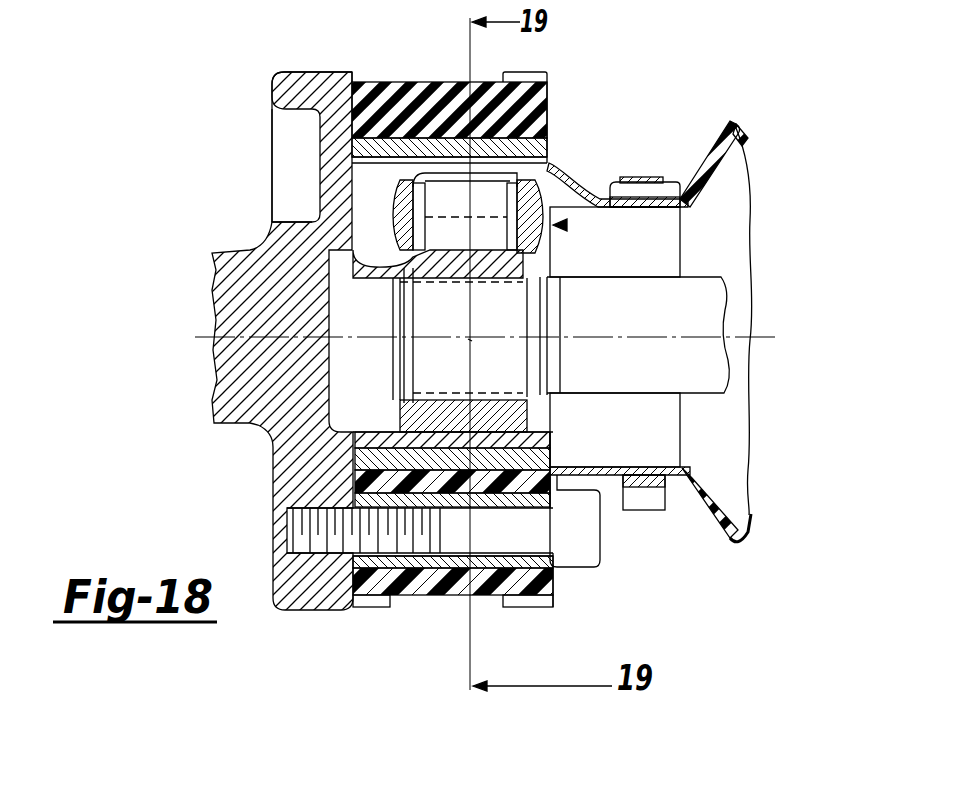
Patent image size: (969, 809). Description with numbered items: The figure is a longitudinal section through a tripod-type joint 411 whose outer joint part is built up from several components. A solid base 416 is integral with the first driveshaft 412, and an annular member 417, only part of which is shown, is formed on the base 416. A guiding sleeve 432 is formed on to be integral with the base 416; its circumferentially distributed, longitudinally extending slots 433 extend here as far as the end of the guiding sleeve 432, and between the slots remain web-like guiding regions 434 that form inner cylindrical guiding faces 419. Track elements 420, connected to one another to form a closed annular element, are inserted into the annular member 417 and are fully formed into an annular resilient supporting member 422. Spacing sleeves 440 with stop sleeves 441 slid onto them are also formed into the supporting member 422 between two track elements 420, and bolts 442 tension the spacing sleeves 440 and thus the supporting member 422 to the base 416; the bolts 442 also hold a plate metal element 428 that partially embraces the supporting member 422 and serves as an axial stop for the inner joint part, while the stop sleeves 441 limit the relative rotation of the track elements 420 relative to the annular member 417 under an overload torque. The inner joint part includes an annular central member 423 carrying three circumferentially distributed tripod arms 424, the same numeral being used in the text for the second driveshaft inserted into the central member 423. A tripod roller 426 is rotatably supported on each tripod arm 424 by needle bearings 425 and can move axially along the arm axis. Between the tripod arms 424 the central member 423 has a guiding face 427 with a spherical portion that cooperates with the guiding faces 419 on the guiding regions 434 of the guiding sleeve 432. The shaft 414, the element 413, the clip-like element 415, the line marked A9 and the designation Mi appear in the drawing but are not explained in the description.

The bearing and hub assembly 411 is at (254, 107).
The first driveshaft 412 is at (250, 262).
The retainer plate 413 is at (628, 178).
The shaft 414 is at (714, 290).
The spring clip 415 is at (735, 122).
The base 416 is at (308, 223).
The annular member 417 is at (365, 68).
The guiding faces 419 is at (530, 417).
The track elements 420 is at (470, 180).
The supporting member 422 is at (410, 95).
The central member 423 is at (383, 582).
The tripod arms 424 is at (551, 120).
The needle bearings 425 is at (551, 162).
The tripod rollers 426 is at (562, 224).
The guiding face 427 is at (468, 482).
The plate metal element 428 is at (657, 513).
The guiding sleeve 432 is at (380, 437).
The slots 433 is at (322, 282).
The guiding regions 434 is at (531, 467).
The spacing sleeves 440 is at (537, 597).
The stop sleeves 441 is at (482, 580).
The bolts 442 is at (600, 508).
The axis of rotation A9 is at (207, 337).
The moment Mi is at (470, 340).